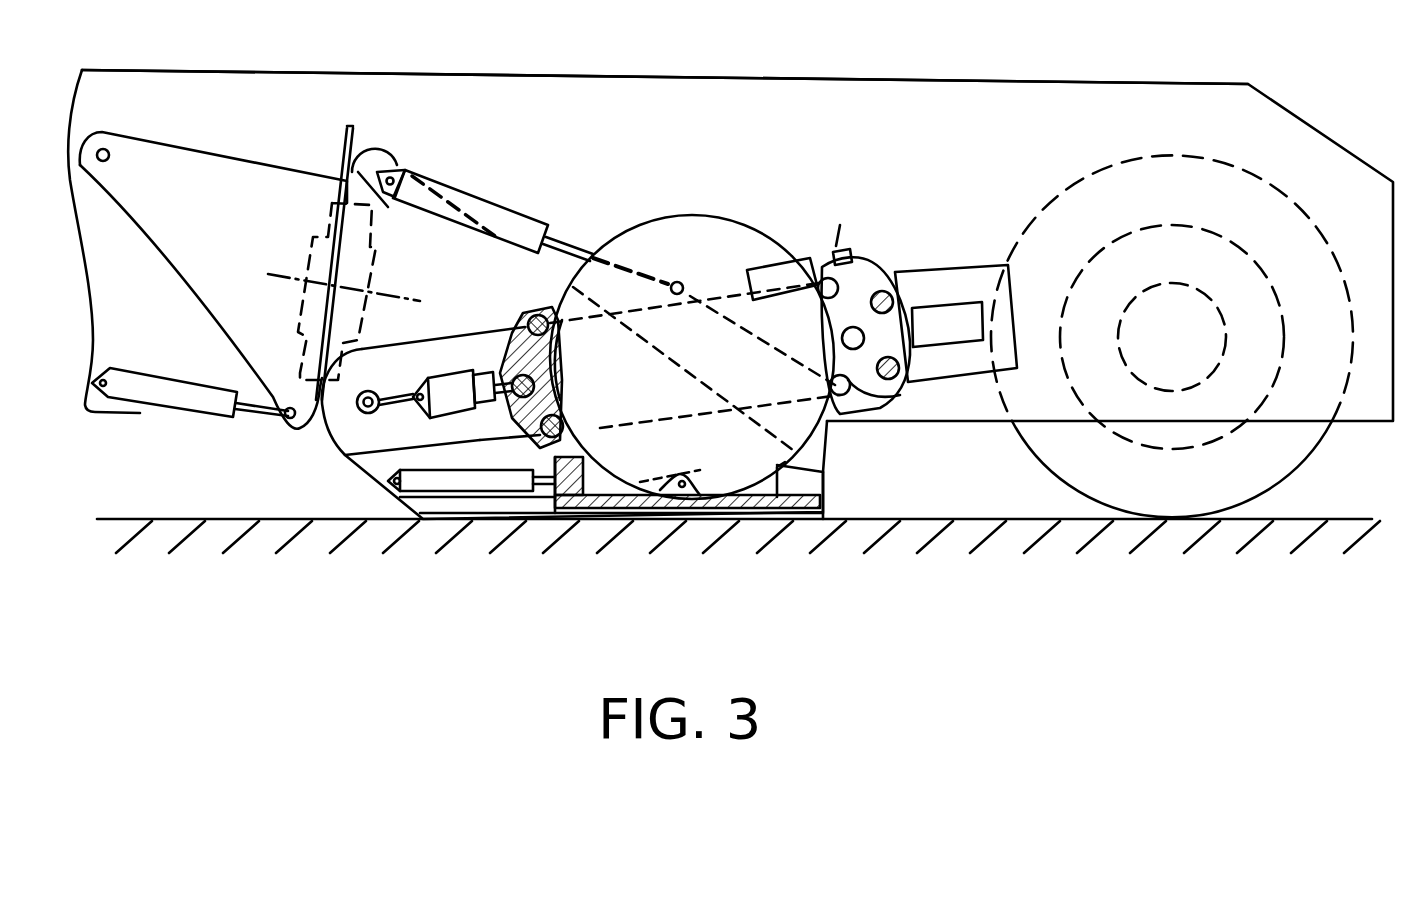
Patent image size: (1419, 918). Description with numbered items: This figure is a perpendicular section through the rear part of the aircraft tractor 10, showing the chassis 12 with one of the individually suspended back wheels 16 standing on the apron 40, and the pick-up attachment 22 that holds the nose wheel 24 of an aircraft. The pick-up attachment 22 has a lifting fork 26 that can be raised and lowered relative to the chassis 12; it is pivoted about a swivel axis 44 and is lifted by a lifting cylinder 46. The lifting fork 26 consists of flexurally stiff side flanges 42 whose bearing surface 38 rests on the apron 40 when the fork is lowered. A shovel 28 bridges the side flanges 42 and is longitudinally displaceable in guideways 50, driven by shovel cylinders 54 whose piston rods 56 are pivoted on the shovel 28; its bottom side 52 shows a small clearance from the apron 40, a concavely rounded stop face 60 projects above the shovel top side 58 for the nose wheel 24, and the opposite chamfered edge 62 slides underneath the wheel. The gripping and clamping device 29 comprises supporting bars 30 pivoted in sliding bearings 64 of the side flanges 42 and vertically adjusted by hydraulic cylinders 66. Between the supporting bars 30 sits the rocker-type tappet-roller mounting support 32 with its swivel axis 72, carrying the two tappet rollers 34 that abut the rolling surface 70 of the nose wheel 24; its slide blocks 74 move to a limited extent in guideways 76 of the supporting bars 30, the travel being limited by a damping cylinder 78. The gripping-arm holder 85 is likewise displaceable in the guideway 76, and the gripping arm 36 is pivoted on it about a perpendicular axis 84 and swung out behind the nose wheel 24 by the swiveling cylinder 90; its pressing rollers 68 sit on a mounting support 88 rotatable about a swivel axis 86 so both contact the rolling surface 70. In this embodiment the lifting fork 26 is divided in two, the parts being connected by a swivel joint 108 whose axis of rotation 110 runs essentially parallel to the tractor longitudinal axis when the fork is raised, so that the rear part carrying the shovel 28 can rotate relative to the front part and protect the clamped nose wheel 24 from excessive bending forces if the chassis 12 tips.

The aircraft tractor 10 is at (974, 76).
The chassis 12 is at (1130, 95).
The back wheel 16 is at (1278, 466).
The pick-up attachment 22 is at (478, 164).
The nose wheel 24 is at (659, 236).
The lifting fork 26 is at (309, 196).
The shovel 28 is at (756, 517).
The gripping and clamping device 29 is at (838, 236).
The supporting bar 30 is at (965, 287).
The tappet-roller mounting support 32 is at (522, 332).
The tappet roller 34 is at (550, 330).
The gripping arm 36 is at (882, 276).
The bearing surface 38 is at (811, 517).
The apron 40 is at (1350, 518).
The side flange 42 is at (826, 479).
The swivel axis 44 is at (121, 146).
The lifting cylinder 46 is at (197, 400).
The guideway 50 is at (500, 503).
The bottom side 52 is at (614, 520).
The shovel cylinder 54 is at (450, 485).
The piston rod 56 is at (671, 486).
The shovel top side 58 is at (780, 478).
The stop face 60 is at (612, 480).
The chamfered edge 62 is at (826, 502).
The sliding bearing 64 is at (368, 414).
The hydraulic cylinder 66 is at (520, 228).
The pressing roller 68 is at (822, 300).
The rolling surface 70 is at (706, 230).
The swivel axis 72 is at (520, 442).
The slide block 74 is at (488, 372).
The guideway 76 is at (466, 418).
The damping cylinder 78 is at (440, 383).
The perpendicular axis 84 is at (847, 252).
The gripping-arm holder 85 is at (765, 306).
The swivel axis 86 is at (865, 338).
The mounting support 88 is at (890, 398).
The swiveling cylinder 90 is at (773, 268).
The swivel joint 108 is at (301, 236).
The axis of rotation 110 is at (271, 274).